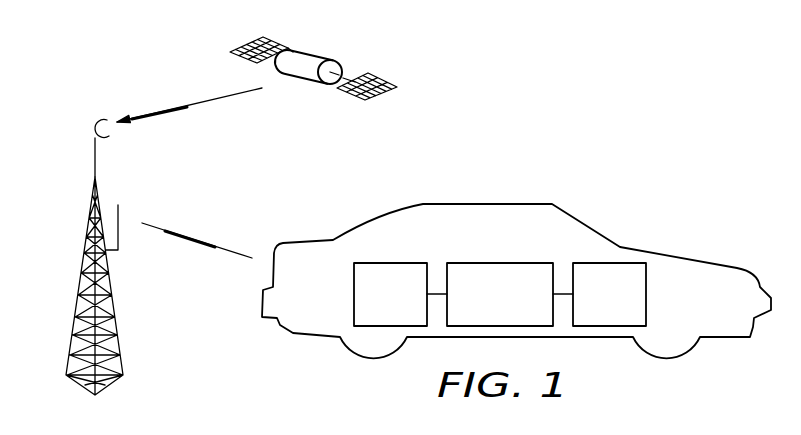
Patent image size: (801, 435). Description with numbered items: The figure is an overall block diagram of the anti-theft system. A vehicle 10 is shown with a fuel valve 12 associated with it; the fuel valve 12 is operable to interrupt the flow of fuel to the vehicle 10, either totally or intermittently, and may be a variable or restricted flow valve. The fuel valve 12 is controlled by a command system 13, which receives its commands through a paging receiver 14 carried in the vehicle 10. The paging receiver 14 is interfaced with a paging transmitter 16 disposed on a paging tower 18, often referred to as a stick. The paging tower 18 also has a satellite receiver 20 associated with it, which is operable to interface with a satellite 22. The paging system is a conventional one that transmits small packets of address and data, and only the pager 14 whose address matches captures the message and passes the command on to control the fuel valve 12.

The vehicle 10 is at (583, 225).
The fuel valve 12 is at (647, 303).
The command system 13 is at (490, 262).
The paging receiver 14 is at (354, 297).
The paging transmitter 16 is at (122, 211).
The paging tower 18 is at (107, 385).
The satellite receiver 20 is at (92, 123).
The satellite 22 is at (320, 56).